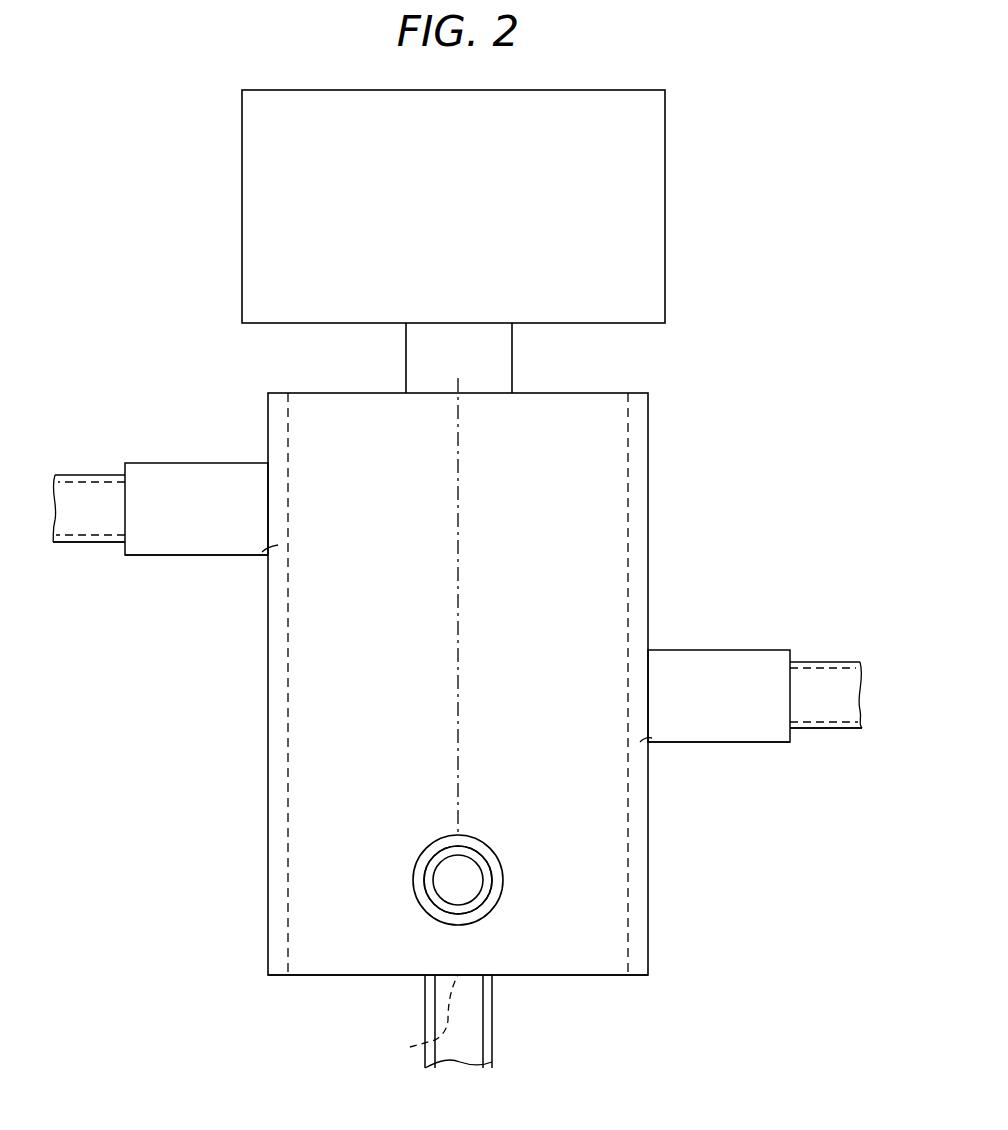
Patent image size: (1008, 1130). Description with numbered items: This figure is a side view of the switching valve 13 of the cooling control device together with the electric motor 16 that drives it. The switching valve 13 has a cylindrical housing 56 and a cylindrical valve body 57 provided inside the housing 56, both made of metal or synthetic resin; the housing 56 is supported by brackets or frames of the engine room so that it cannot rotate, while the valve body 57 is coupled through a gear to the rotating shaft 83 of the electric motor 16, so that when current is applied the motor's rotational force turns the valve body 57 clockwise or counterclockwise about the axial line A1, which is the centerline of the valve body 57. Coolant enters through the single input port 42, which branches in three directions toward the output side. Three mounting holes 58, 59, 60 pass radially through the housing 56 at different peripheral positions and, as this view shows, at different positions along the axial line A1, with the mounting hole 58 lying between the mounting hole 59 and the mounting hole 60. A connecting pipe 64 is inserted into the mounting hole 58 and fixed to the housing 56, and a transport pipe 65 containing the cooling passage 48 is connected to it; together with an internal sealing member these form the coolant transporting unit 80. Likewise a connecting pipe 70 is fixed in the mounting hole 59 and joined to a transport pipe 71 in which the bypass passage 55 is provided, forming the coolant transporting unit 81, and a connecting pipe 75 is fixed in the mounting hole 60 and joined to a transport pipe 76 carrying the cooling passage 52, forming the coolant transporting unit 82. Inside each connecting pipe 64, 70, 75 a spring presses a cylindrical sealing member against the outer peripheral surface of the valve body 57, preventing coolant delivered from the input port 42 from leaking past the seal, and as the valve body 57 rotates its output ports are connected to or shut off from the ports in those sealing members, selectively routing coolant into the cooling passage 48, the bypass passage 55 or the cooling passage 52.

The electric motor 16 is at (255, 222).
The switching valve 13 is at (262, 417).
The rotating shaft 83 is at (418, 358).
The valve body 57 is at (288, 740).
The housing 56 is at (327, 803).
The axial line A1 is at (458, 484).
The connecting pipe 75 is at (180, 486).
The cooling passage 52 is at (86, 492).
The transport pipe 76 is at (75, 543).
The coolant transporting unit 82 is at (140, 567).
The mounting hole 60 is at (268, 552).
The connecting pipe 64 is at (716, 664).
The cooling passage 48 is at (822, 688).
The transport pipe 65 is at (832, 731).
The coolant transporting unit 80 is at (751, 760).
The mounting hole 58 is at (652, 742).
The connecting pipe 70 is at (413, 882).
The mounting hole 59 is at (502, 897).
The transport pipe 71 is at (483, 907).
The bypass passage 55 is at (452, 887).
The coolant transporting unit 81 is at (522, 884).
The input port 42 is at (410, 1047).